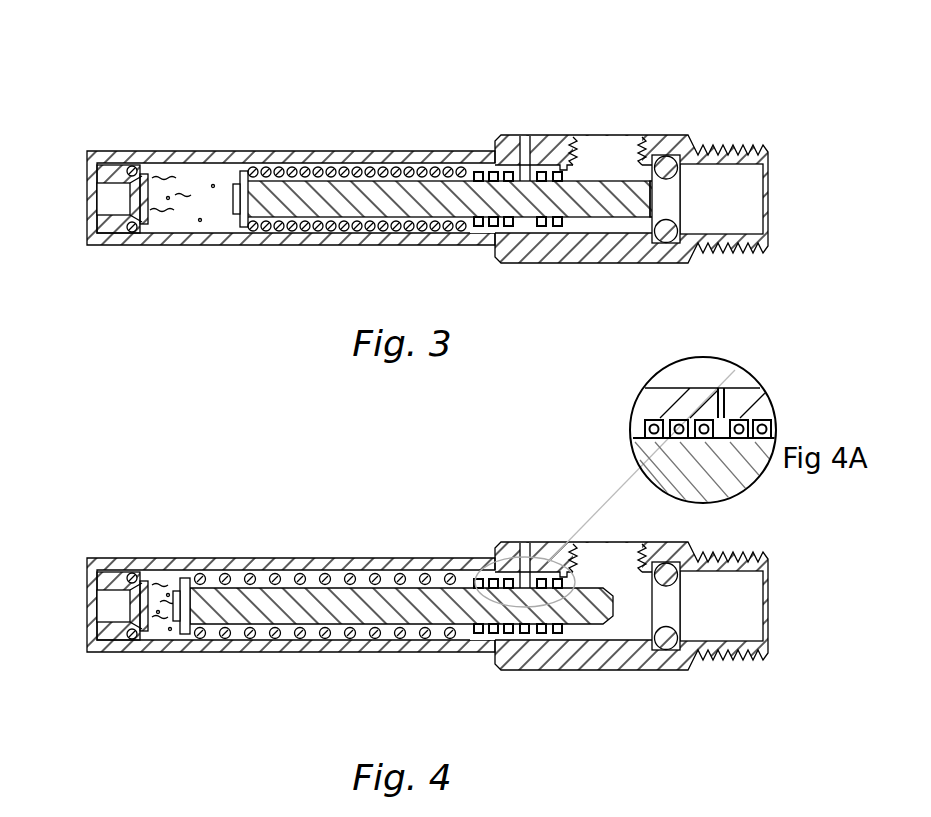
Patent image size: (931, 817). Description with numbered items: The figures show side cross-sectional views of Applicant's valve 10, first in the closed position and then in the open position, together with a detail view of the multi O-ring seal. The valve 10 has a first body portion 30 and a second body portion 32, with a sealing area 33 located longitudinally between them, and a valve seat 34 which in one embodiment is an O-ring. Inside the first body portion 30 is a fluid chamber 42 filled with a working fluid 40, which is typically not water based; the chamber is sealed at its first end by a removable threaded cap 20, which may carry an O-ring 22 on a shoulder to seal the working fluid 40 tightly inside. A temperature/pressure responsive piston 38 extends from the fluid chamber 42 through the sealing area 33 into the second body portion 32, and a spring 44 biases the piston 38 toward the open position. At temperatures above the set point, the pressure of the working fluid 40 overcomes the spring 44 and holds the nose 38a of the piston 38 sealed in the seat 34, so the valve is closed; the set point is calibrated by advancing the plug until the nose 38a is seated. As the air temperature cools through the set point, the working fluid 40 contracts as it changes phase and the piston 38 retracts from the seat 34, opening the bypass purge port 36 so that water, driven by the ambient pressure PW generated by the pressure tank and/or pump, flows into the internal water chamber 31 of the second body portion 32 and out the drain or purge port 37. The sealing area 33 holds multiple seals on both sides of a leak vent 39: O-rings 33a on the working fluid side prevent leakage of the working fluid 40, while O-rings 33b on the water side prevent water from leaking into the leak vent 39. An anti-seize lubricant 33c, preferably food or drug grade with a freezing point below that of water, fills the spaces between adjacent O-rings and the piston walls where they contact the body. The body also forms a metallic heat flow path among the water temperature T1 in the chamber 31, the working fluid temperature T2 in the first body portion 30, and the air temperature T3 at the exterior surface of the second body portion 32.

In FIG. 3, the valve 10 is at (225, 92).
In FIG. 4, the valve 10 is at (225, 501).
In FIG. 3, the removable threaded cap 20 is at (110, 183).
In FIG. 4, the removable threaded cap 20 is at (108, 618).
In FIG. 3, the O-ring 22 is at (131, 233).
In FIG. 4, the O-ring 22 is at (126, 573).
In FIG. 3, the first body portion 30 is at (87, 145).
In FIG. 3, the internal water cavity/chamber 31 is at (600, 168).
In FIG. 4, the internal water cavity/chamber 31 is at (632, 624).
In FIG. 3, the second body portion 32 is at (569, 125).
In FIG. 3, the sealing area 33 is at (475, 125).
In FIG. 4, the O-rings on working fluid side 33a is at (496, 656).
In FIG. 4, the O-rings on water side 33b is at (556, 638).
In FIG. 4, the anti-seize lubricant 33c is at (527, 630).
In FIG. 4A, the anti-seize lubricant 33c is at (747, 477).
In FIG. 3, the valve seat 34 is at (672, 243).
In FIG. 3, the bypass purge port 36 is at (682, 217).
In FIG. 4, the outlet or purge port 37 is at (601, 553).
In FIG. 3, the piston 38 is at (313, 203).
In FIG. 4, the piston 38 is at (312, 641).
In FIG. 4A, the piston 38 is at (640, 478).
In FIG. 3, the nose 38a is at (663, 207).
In FIG. 4, the leak vent 39 is at (526, 553).
In FIG. 4A, the leak vent 39 is at (715, 425).
In FIG. 3, the working fluid 40 is at (163, 223).
In FIG. 3, the fluid chamber 42 is at (210, 231).
In FIG. 3, the spring 44 is at (378, 236).
In FIG. 3, the ambient pressure PW is at (752, 200).
In FIG. 4, the temperature of water in chamber T1 is at (641, 603).
In FIG. 4, the temperature in cylinder T2 is at (161, 636).
In FIG. 4, the air temperature on exterior surface T3 is at (276, 558).